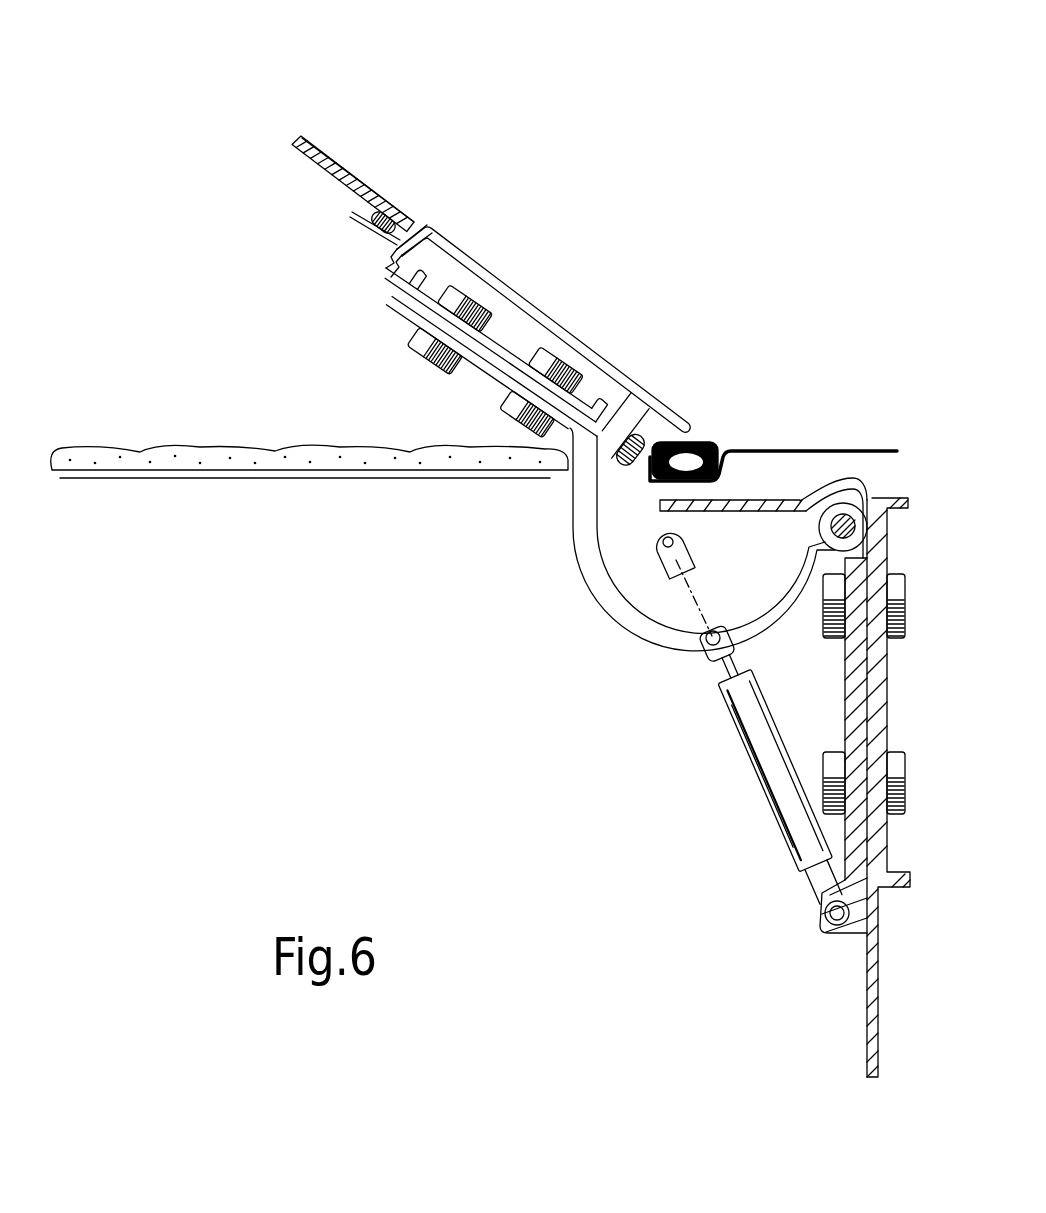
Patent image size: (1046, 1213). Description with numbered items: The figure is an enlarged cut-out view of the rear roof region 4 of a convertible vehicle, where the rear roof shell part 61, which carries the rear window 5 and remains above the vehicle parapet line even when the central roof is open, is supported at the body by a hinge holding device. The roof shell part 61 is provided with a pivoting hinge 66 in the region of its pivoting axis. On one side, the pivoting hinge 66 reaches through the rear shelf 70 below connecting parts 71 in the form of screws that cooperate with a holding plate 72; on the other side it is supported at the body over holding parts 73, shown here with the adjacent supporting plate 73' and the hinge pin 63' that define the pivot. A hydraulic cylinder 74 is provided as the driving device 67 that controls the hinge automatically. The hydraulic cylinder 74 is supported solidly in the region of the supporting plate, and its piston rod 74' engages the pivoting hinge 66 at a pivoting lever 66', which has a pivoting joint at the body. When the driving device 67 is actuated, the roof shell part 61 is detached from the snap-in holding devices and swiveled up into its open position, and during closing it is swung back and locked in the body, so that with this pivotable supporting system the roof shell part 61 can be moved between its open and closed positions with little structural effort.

The rear roof region 4 is at (255, 130).
The rear window 5 is at (368, 183).
The roof shell part 61 is at (484, 232).
The holding plate 72 is at (392, 252).
The connecting parts 71 is at (398, 338).
The rear shelf 70 is at (297, 463).
The pivoting hinge 66 is at (487, 534).
The pivoting lever 66' is at (660, 539).
The hinge pin 63' is at (763, 438).
The holding parts 73 is at (888, 697).
The mounting plate 73' is at (842, 745).
The driving device 67 is at (735, 855).
The hydraulic cylinder 74 is at (742, 773).
The piston rod 74' is at (657, 645).